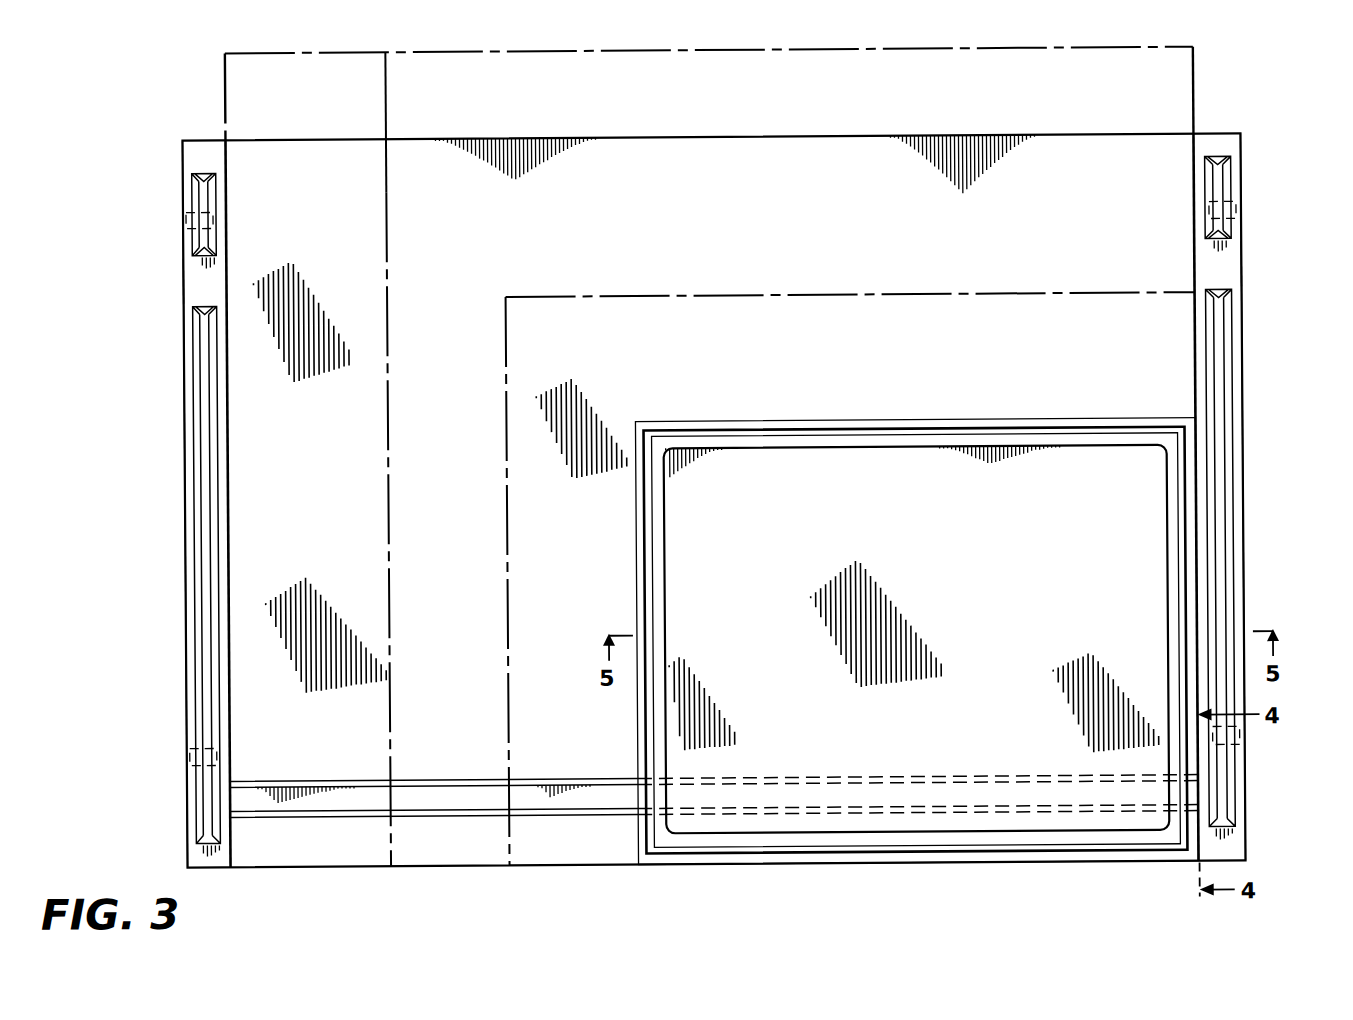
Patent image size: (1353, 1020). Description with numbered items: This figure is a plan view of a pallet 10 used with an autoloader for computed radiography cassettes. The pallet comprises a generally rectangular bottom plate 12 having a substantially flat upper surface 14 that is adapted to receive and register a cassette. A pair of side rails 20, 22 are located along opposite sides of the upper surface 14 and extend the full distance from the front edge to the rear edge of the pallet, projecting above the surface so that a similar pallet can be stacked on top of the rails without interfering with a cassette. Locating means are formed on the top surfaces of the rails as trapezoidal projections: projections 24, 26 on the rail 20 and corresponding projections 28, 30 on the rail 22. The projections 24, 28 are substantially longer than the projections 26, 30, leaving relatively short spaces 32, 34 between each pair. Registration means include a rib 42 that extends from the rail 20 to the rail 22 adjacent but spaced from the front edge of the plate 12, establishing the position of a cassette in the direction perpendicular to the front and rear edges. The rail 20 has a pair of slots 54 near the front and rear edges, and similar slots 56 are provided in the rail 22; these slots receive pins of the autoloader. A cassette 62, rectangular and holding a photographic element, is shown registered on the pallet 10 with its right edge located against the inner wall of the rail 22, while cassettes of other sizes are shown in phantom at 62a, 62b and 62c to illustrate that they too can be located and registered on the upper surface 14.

The pallet 10 is at (158, 422).
The bottom plate 12 is at (321, 850).
The upper surface 14 is at (452, 472).
The side rail 20 is at (186, 568).
The side rail 22 is at (1200, 382).
The projection 24 is at (196, 380).
The projection 26 is at (200, 195).
The projection 28 is at (1212, 340).
The projection 30 is at (1215, 190).
The space 32 is at (195, 285).
The space 34 is at (1210, 275).
The rib 42 is at (468, 792).
The slots 54 is at (188, 218).
The slots 56 is at (1240, 215).
The cassette 62 is at (780, 402).
The cassette 62a is at (590, 296).
The cassette 62b is at (389, 258).
The cassette 62c is at (226, 78).